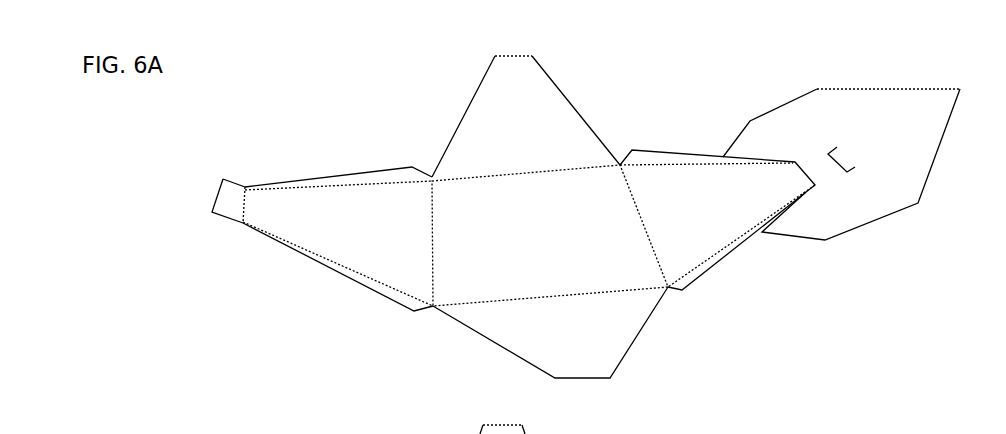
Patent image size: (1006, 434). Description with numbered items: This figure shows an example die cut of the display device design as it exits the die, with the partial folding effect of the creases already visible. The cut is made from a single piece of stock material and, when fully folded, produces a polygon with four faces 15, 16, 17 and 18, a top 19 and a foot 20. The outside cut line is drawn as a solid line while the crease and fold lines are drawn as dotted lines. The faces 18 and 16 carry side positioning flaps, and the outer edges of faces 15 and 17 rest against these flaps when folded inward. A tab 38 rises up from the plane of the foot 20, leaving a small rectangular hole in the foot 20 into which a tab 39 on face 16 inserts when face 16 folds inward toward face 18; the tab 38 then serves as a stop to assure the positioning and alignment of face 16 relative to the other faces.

The face 15 is at (550, 332).
The face 16 is at (717, 220).
The face 17 is at (526, 116).
The face 18 is at (338, 239).
The top 19 is at (550, 235).
The foot 20 is at (841, 164).
The tab 38 is at (850, 154).
The tab 39 is at (228, 201).